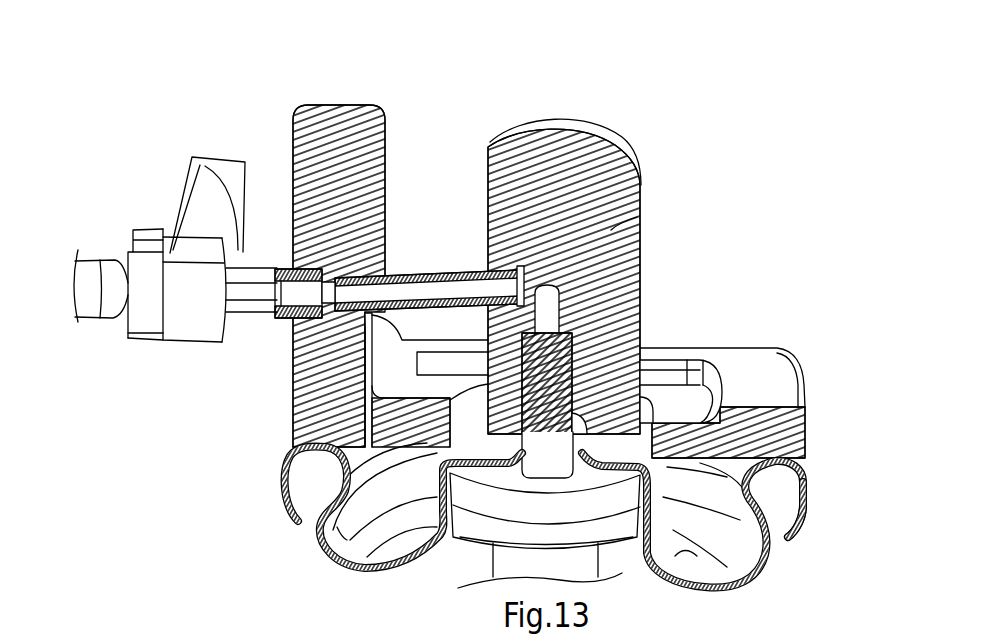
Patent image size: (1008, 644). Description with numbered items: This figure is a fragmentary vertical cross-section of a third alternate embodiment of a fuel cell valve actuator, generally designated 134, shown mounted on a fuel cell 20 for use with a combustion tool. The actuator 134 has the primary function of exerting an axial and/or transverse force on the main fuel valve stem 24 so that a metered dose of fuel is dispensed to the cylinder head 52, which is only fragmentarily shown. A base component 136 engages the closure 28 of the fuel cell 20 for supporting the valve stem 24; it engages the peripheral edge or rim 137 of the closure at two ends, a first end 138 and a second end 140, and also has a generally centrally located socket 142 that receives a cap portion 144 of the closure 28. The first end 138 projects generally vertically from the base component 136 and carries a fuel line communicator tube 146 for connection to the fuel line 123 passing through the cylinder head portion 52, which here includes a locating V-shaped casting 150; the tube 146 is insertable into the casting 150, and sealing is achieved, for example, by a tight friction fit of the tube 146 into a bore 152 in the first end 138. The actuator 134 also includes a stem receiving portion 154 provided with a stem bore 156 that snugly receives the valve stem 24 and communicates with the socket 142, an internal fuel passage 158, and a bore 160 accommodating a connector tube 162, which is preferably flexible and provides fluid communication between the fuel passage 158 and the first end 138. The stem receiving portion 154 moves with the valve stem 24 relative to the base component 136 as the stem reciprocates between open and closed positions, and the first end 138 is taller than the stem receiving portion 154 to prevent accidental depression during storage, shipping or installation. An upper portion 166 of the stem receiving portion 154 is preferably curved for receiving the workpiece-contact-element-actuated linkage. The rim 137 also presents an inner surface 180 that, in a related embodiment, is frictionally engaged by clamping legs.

The fuel cell 20 is at (283, 563).
The fuel valve stem 24 is at (493, 553).
The closure 28 is at (707, 577).
The cylinder head 52 is at (153, 240).
The fuel line 123 is at (88, 302).
The actuator 134 is at (716, 128).
The base component 136 is at (690, 422).
The peripheral edge or rim 137 is at (773, 517).
The first end 138 is at (323, 406).
The second end 140 is at (806, 437).
The socket 142 is at (690, 557).
The cap portion 144 is at (540, 458).
The fuel line communicator tube 146 is at (277, 322).
The locating V-shaped casting 150 is at (200, 322).
The bore 152 is at (305, 267).
The stem receiving portion 154 is at (643, 211).
The stem bore 156 is at (580, 355).
The internal fuel passage 158 is at (633, 284).
The bore 160 is at (485, 270).
The connector tube 162 is at (428, 268).
The upper portion 166 is at (600, 138).
The inner surface 180 is at (340, 556).